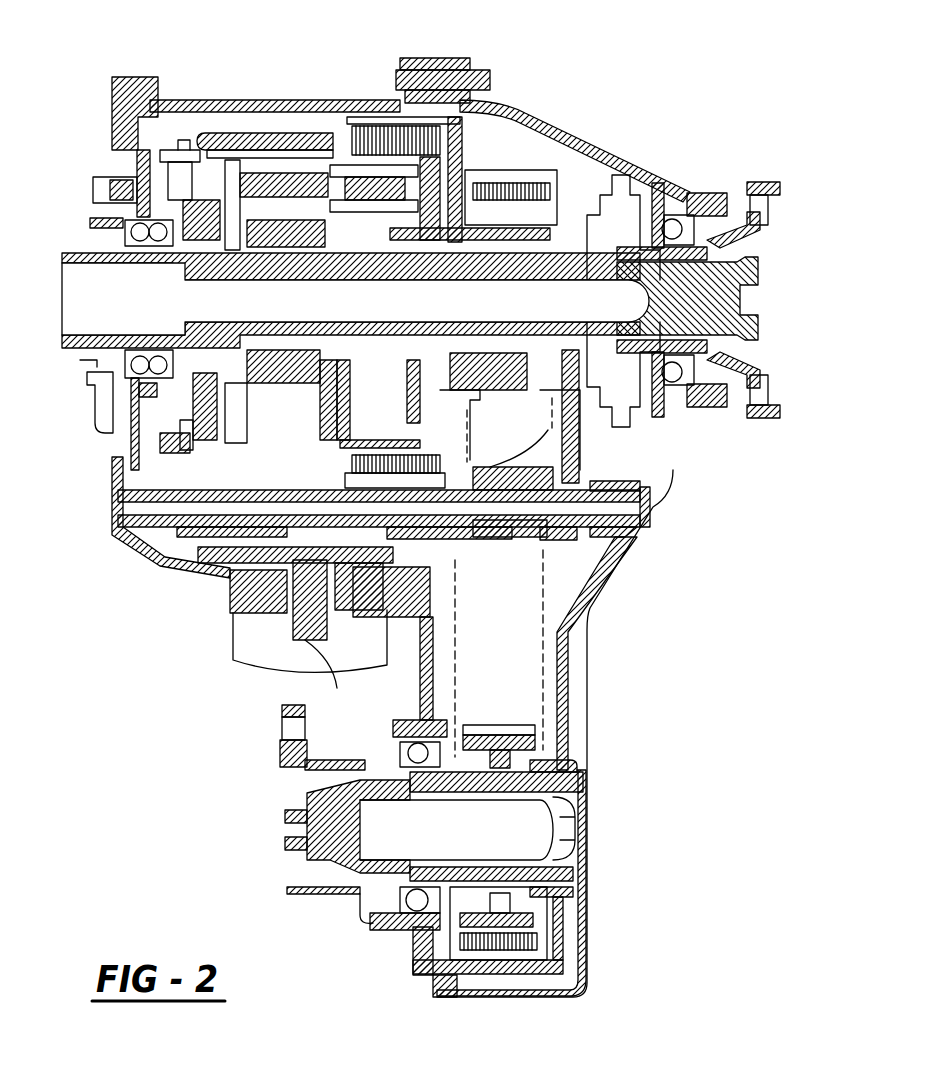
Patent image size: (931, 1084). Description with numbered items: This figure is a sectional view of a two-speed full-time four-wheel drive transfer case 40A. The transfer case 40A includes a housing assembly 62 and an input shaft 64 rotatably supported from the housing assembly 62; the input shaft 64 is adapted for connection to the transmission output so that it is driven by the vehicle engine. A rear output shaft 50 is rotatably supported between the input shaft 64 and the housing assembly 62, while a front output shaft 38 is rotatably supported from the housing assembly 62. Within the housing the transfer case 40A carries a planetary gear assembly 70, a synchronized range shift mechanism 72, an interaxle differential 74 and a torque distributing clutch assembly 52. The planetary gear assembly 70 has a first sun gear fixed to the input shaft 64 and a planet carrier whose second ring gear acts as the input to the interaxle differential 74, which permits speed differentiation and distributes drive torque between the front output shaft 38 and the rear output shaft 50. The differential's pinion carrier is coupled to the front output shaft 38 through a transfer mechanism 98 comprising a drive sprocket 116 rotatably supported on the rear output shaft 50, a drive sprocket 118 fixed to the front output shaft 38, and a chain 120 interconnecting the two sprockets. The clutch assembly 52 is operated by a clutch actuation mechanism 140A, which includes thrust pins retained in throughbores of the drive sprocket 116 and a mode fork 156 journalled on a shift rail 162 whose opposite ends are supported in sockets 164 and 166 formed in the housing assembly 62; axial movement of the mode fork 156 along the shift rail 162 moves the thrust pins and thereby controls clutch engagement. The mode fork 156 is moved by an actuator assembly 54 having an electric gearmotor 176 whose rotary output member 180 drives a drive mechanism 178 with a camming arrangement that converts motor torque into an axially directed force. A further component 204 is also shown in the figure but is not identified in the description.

The front output shaft 38 is at (315, 800).
The transfer case 40A is at (672, 130).
The rear output shaft 50 is at (730, 275).
The torque distributing clutch assembly 52 is at (372, 113).
The actuator assembly 54 is at (236, 648).
The housing assembly 62 is at (426, 52).
The input shaft 64 is at (95, 245).
The planetary gear assembly 70 is at (258, 132).
The synchronized range shift mechanism 72 is at (185, 128).
The interaxle differential 74 is at (378, 264).
The transfer mechanism 98 is at (580, 736).
The drive sprocket 116 is at (503, 355).
The drive sprocket 118 is at (505, 726).
The chain 120 is at (547, 597).
The clutch actuation mechanism 140A is at (468, 128).
The mode fork 156 is at (535, 470).
The shift rail 162 is at (655, 500).
The socket 164 is at (122, 538).
The socket 166 is at (598, 484).
The electric gearmotor 176 is at (245, 668).
The drive mechanism 178 is at (447, 567).
The rotary output member 180 is at (331, 676).
The gear hub 204 is at (355, 565).